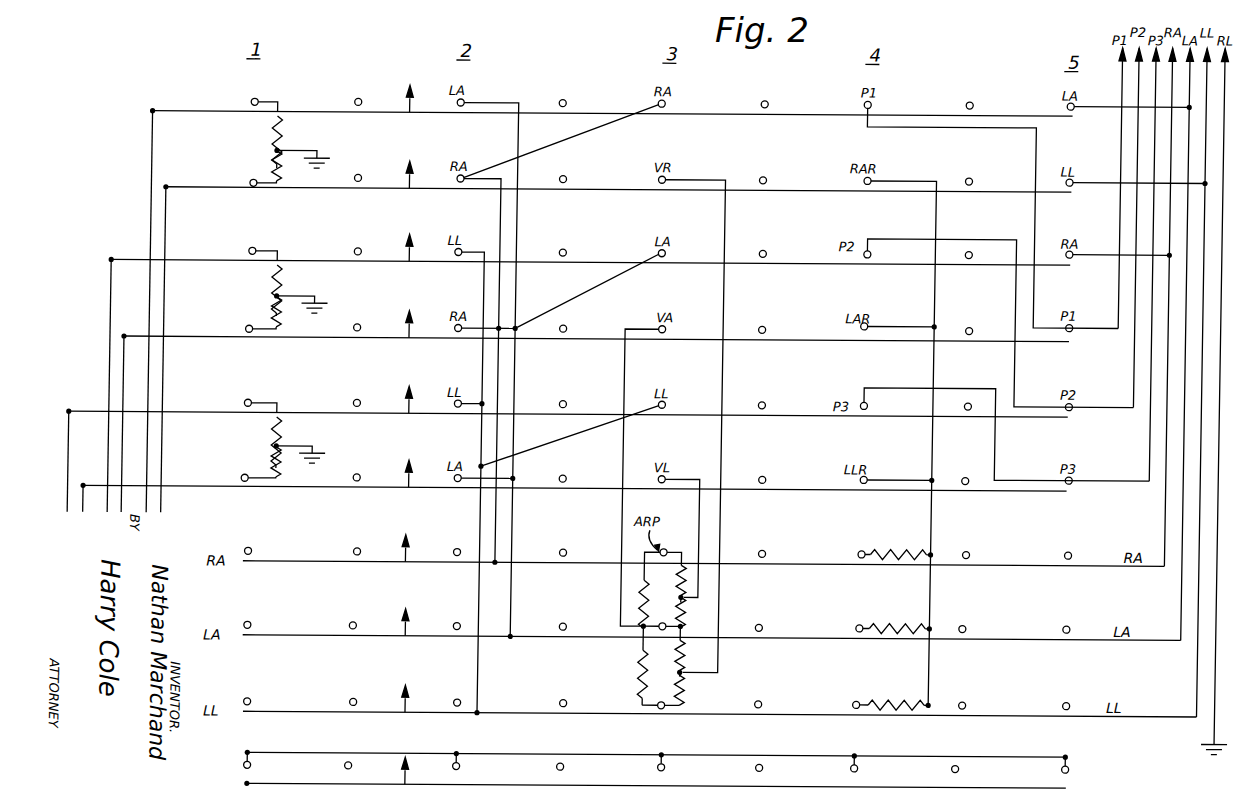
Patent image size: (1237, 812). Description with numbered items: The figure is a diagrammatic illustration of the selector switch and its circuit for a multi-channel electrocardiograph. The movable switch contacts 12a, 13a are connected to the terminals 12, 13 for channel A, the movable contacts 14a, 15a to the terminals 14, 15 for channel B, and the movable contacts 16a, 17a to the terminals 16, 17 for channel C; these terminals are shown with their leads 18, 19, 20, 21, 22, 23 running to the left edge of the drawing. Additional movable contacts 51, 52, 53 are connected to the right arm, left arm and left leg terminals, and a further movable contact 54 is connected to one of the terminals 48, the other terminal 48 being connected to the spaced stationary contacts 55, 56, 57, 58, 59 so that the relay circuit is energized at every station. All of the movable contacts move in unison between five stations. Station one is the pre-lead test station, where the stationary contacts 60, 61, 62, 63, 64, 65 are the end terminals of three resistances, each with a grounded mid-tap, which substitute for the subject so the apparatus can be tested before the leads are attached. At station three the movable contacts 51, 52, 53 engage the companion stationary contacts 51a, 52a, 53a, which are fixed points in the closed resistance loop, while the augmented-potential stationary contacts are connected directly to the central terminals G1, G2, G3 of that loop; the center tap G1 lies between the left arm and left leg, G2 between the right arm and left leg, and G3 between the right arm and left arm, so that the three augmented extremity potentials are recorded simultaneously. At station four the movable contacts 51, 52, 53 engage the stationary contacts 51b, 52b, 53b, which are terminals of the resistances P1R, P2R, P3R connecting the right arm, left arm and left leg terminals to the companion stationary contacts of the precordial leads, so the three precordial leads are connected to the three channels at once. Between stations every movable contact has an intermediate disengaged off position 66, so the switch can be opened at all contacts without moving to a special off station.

The terminal 12 is at (154, 113).
The terminal 13 is at (169, 189).
The terminal 14 is at (103, 265).
The terminal 15 is at (124, 337).
The terminal 16 is at (70, 413).
The terminal 17 is at (86, 487).
The lead 18 is at (164, 228).
The lead 19 is at (146, 222).
The lead 20 is at (123, 350).
The lead 21 is at (107, 321).
The lead 22 is at (84, 495).
The lead 23 is at (69, 437).
The movable switch contact 12a is at (421, 72).
The movable switch contact 13a is at (410, 170).
The movable switch contact 14a is at (411, 244).
The movable switch contact 15a is at (412, 320).
The movable switch contact 16a is at (413, 396).
The movable switch contact 17a is at (428, 452).
The terminal 48 is at (253, 754).
The movable contact 51 is at (413, 548).
The movable contact 52 is at (414, 618).
The movable contact 53 is at (415, 694).
The stationary contact 51a is at (668, 557).
The stationary contact 52a is at (666, 622).
The stationary contact 53a is at (670, 705).
The stationary contact 51b is at (865, 553).
The stationary contact 52b is at (864, 626).
The stationary contact 53b is at (860, 702).
The movable contact 54 is at (416, 770).
The stationary contact 55 is at (257, 768).
The stationary contact 56 is at (466, 768).
The stationary contact 57 is at (671, 768).
The stationary contact 58 is at (864, 768).
The stationary contact 59 is at (1075, 768).
The stationary contact 60 is at (252, 98).
The stationary contact 61 is at (257, 180).
The stationary contact 62 is at (254, 250).
The stationary contact 63 is at (247, 328).
The stationary contact 64 is at (248, 402).
The stationary contact 65 is at (245, 478).
The off position 66 is at (354, 100).
The central terminal G1 is at (687, 672).
The central terminal G2 is at (646, 626).
The central terminal G3 is at (687, 597).
The resistance P1R is at (935, 553).
The resistance P2R is at (935, 627).
The resistance P3R is at (933, 706).